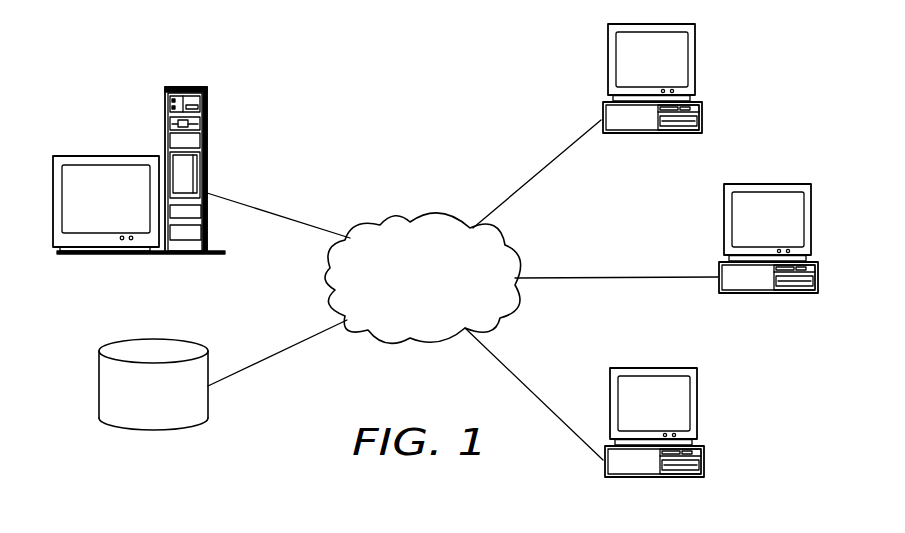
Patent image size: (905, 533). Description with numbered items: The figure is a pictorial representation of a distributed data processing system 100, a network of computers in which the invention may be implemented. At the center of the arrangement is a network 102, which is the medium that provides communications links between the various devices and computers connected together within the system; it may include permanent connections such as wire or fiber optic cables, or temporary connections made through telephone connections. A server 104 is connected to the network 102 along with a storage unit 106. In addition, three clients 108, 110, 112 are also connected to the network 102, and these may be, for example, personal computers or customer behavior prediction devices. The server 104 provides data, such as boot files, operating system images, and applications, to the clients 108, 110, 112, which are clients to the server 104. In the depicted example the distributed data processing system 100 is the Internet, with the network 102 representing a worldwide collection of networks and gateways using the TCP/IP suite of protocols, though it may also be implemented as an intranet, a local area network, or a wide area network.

The distributed data processing system 100 is at (294, 66).
The network 102 is at (407, 223).
The server 104 is at (166, 112).
The storage unit 106 is at (99, 383).
The client 108 is at (696, 68).
The client 110 is at (811, 225).
The client 112 is at (698, 410).